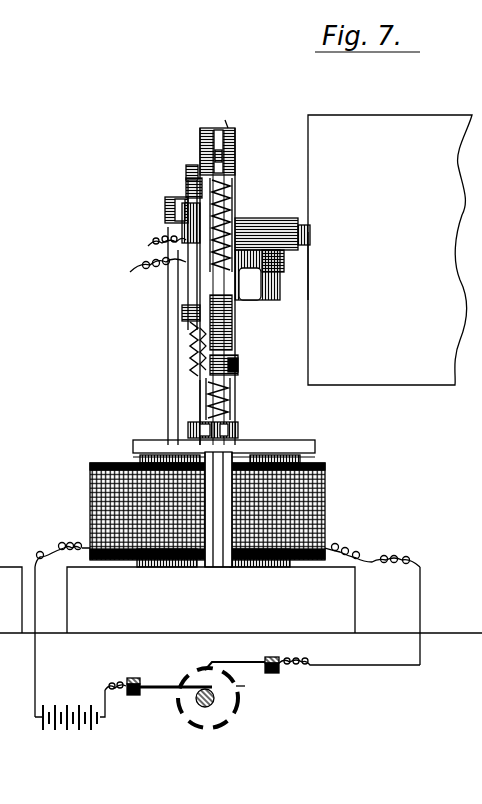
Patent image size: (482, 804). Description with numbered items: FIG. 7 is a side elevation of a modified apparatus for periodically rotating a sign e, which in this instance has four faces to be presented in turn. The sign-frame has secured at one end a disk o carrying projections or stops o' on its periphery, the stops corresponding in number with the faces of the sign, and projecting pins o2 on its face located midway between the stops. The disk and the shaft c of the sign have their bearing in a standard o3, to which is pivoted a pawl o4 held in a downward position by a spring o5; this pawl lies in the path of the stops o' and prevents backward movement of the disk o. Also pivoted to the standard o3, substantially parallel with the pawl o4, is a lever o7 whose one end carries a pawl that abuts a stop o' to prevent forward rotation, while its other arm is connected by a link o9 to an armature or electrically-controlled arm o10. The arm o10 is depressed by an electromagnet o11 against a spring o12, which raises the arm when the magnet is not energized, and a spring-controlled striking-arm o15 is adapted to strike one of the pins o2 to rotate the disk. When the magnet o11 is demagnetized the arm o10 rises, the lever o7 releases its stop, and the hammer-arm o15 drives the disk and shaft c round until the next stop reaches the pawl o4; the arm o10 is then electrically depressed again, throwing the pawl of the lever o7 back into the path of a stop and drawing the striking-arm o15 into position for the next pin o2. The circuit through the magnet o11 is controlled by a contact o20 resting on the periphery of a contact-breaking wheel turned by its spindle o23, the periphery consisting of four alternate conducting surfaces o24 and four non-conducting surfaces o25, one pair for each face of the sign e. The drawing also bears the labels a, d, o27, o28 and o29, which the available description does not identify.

The sign e is at (394, 116).
The shaft support a is at (308, 318).
The shaft c is at (154, 254).
The hub block d is at (272, 259).
The disk o is at (233, 286).
The stops o' is at (233, 142).
The projecting pins o2 is at (166, 322).
The standard o3 is at (200, 402).
The pawl o4 is at (226, 114).
The spring o5 is at (236, 196).
The lever o7 is at (240, 366).
The link o9 is at (233, 406).
The armature arm o10 is at (242, 432).
The electromagnet o11 is at (285, 452).
The spring o12 is at (192, 353).
The striking-arm o15 is at (189, 164).
The contact arm o20 is at (232, 670).
The spindle o23 is at (206, 708).
The conducting surfaces o24 is at (180, 704).
The non-conducting surfaces o25 is at (252, 687).
The armature lever o27 is at (165, 686).
The circuit wire o28 is at (420, 600).
The battery o29 is at (70, 706).